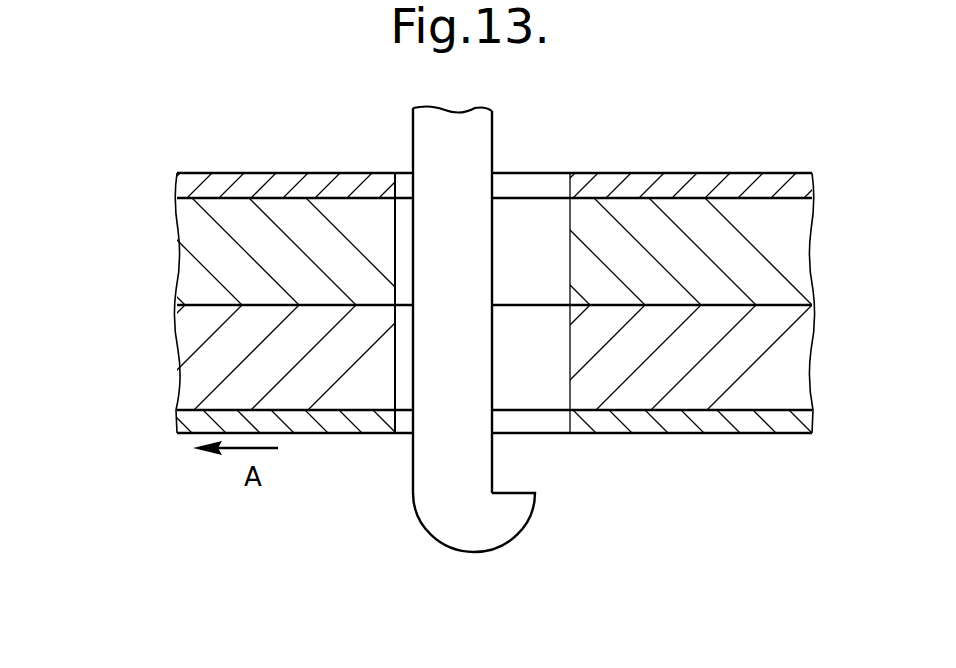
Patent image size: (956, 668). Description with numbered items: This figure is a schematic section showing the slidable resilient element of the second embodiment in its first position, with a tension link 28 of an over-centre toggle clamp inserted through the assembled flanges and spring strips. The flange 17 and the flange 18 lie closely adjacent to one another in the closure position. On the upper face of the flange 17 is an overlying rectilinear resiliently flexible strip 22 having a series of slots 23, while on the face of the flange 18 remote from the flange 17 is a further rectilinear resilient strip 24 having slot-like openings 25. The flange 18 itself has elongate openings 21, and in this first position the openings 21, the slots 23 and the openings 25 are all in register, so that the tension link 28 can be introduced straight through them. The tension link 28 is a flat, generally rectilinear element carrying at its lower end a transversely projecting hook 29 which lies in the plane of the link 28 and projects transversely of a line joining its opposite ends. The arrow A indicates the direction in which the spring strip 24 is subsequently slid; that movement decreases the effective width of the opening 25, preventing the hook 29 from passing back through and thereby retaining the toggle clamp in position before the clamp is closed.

The flange 17 is at (186, 262).
The flange 18 is at (180, 370).
The openings 21 is at (548, 357).
The resiliently flexible strip 22 is at (178, 190).
The slots 23 is at (540, 186).
The resilient strip 24 is at (180, 428).
The slot-like openings 25 is at (536, 418).
The tension link 28 is at (411, 135).
The hook 29 is at (534, 520).